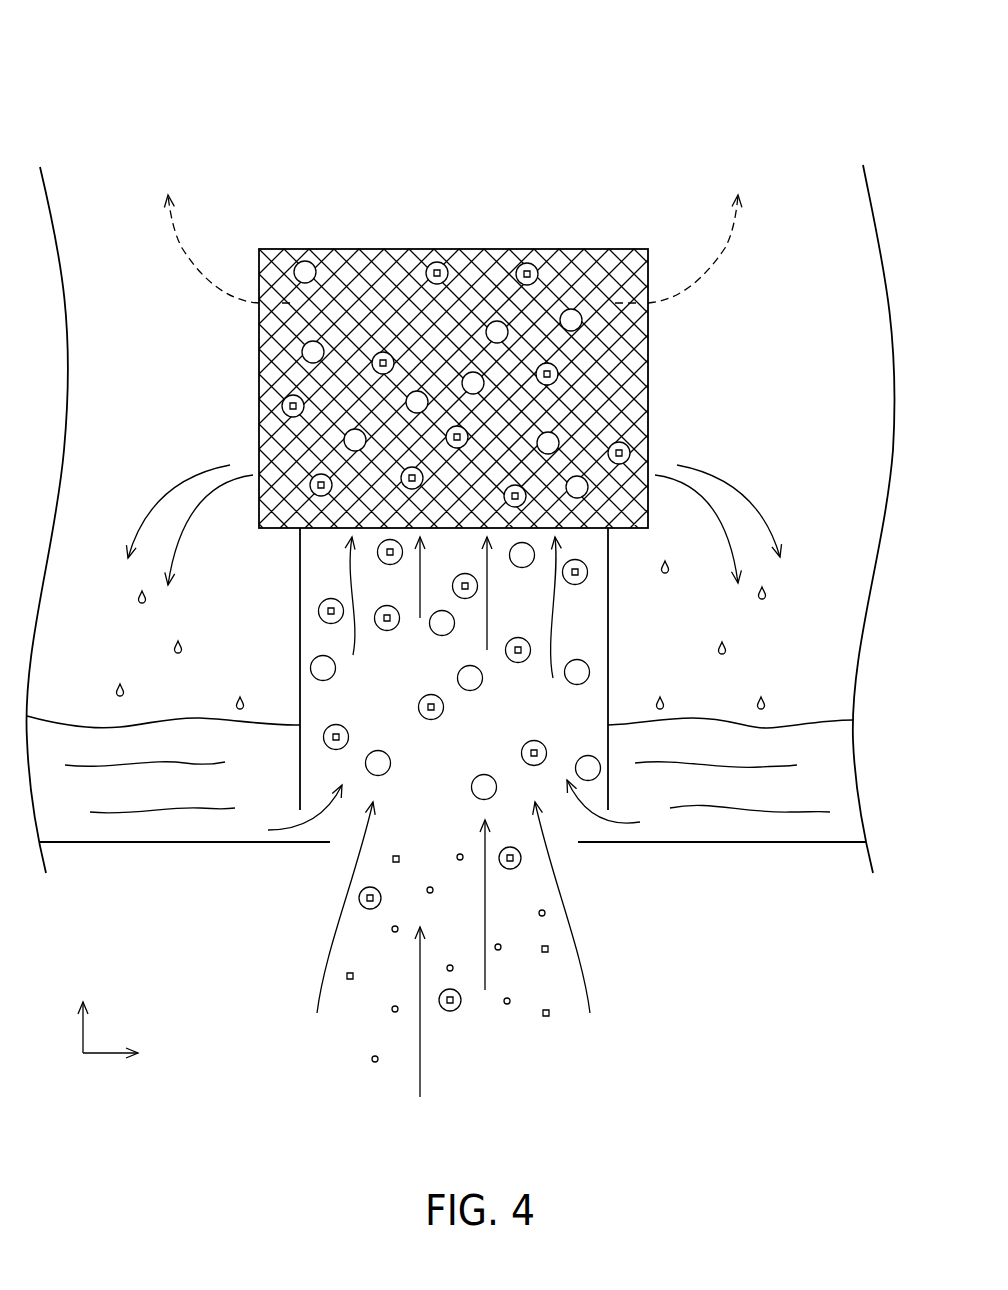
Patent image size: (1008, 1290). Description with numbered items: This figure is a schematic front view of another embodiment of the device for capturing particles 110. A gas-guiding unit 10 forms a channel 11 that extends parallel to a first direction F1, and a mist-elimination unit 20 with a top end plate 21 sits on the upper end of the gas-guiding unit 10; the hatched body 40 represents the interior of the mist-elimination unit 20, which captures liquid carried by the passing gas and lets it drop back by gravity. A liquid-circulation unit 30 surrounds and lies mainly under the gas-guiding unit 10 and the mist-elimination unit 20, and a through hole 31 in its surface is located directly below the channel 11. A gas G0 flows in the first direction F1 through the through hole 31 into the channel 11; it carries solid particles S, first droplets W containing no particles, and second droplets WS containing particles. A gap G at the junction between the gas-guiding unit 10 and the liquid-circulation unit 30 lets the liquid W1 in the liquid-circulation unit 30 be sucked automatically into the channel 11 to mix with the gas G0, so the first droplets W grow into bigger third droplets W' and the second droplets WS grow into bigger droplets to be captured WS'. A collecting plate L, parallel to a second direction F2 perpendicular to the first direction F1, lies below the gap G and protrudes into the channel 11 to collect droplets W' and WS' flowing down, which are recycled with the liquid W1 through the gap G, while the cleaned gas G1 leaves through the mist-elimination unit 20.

The exhaust gas treatment device 110 is at (120, 57).
The gas-guiding unit 10 is at (298, 628).
The channel 11 is at (608, 645).
The mist-elimination unit 20 is at (472, 248).
The top end plate 21 is at (376, 254).
The filter material 40 is at (605, 362).
The liquid-circulation unit 30 is at (728, 843).
The through hole 31 is at (558, 838).
The purified gas G1 is at (182, 248).
The gap G is at (298, 820).
The gas G0 is at (587, 972).
The collecting plate L is at (324, 845).
The liquid W1 is at (807, 737).
The first droplets W is at (458, 966).
The third droplets W' is at (454, 495).
The second droplets WS is at (440, 962).
The droplets to be captured WS' is at (453, 489).
The solid particles S is at (546, 1018).
The first direction F1 is at (84, 1008).
The second direction F2 is at (126, 1053).